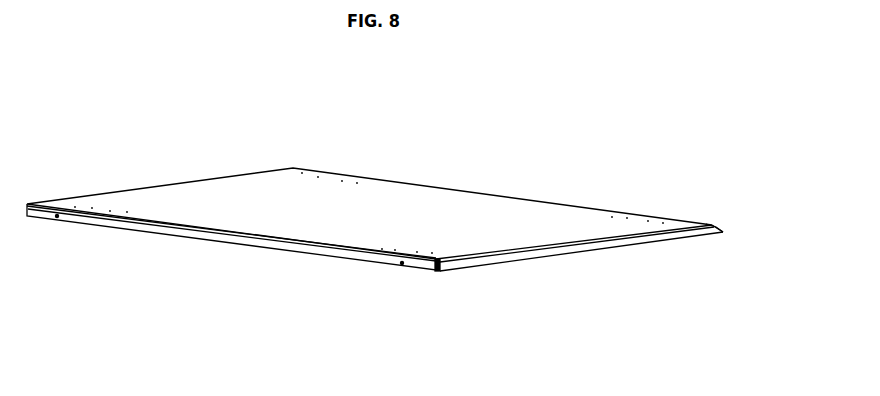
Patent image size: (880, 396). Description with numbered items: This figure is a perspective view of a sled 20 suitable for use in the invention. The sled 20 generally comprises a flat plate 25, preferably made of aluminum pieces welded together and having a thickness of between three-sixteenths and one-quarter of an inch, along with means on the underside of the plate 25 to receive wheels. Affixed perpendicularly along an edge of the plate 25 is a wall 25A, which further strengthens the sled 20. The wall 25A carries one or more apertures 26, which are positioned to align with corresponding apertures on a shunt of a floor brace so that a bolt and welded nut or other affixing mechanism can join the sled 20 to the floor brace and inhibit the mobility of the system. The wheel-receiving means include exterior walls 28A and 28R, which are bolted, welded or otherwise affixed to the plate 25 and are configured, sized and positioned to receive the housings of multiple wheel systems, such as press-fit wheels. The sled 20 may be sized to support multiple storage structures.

The sled 20 is at (424, 234).
The plate 25 is at (444, 222).
The wall 25A is at (287, 252).
The apertures 26 is at (229, 287).
The exterior wall 28A is at (545, 250).
The exterior wall 28R is at (722, 220).